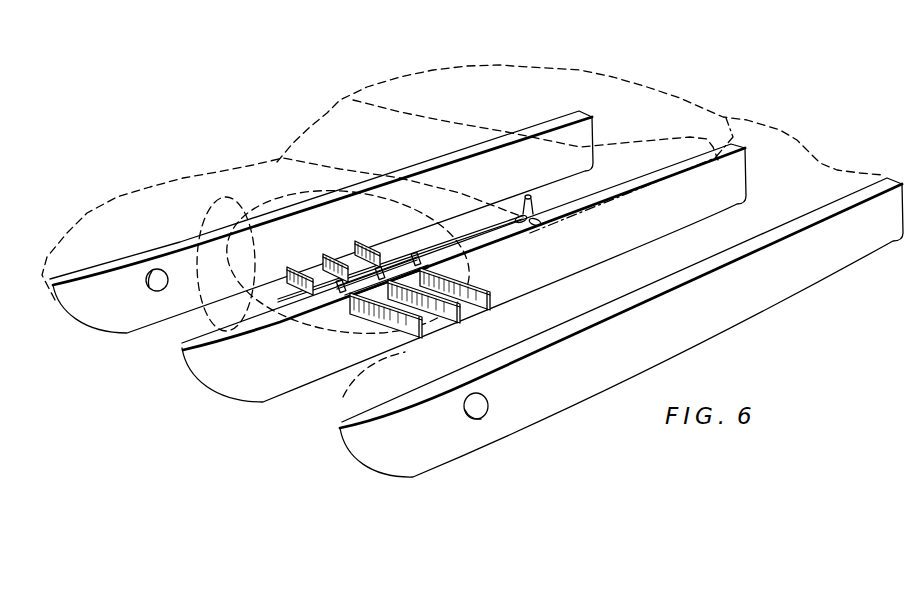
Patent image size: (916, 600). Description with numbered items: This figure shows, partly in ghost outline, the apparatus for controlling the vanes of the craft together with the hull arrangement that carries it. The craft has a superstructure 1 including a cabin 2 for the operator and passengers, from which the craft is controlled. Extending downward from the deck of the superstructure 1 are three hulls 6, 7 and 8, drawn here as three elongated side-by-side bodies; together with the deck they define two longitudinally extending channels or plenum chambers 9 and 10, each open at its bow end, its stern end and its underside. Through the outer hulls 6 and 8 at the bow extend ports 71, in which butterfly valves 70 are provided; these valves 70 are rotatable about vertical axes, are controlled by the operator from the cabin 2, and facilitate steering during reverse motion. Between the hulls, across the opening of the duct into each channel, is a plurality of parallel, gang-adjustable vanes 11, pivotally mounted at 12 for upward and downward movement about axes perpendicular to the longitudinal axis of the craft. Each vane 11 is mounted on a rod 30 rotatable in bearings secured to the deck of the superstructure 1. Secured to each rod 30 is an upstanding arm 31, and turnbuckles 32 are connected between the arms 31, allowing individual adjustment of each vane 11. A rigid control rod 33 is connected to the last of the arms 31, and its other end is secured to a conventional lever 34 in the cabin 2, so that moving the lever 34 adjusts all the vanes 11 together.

The superstructure 1 is at (172, 179).
The cabin 2 is at (511, 65).
The hull 6 is at (86, 318).
The hull 7 is at (232, 386).
The hull 8 is at (380, 454).
The channel or plenum chamber 9 is at (171, 332).
The channel or plenum chamber 10 is at (326, 399).
The vanes 11 is at (323, 259).
The pivot mounting 12 is at (350, 295).
The rod 30 is at (392, 314).
The upstanding arm 31 is at (341, 292).
The turnbuckles 32 is at (352, 273).
The control rod 33 is at (468, 234).
The lever 34 is at (522, 203).
The butterfly valves 70 is at (154, 285).
The ports 71 is at (147, 284).